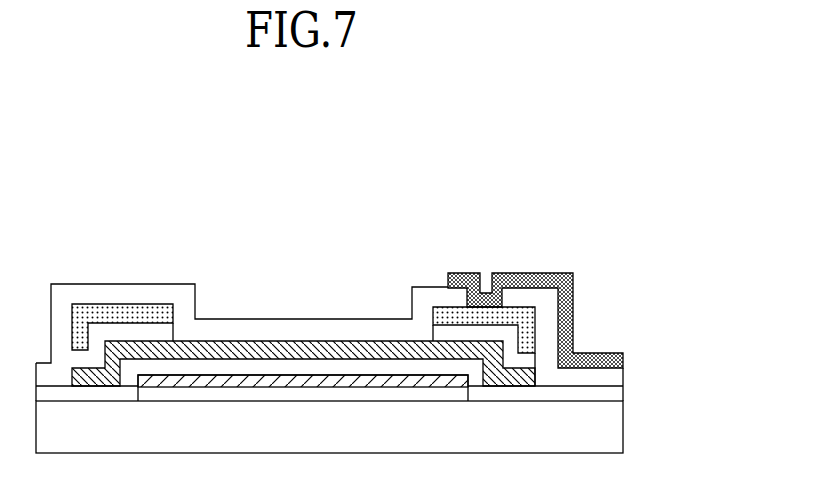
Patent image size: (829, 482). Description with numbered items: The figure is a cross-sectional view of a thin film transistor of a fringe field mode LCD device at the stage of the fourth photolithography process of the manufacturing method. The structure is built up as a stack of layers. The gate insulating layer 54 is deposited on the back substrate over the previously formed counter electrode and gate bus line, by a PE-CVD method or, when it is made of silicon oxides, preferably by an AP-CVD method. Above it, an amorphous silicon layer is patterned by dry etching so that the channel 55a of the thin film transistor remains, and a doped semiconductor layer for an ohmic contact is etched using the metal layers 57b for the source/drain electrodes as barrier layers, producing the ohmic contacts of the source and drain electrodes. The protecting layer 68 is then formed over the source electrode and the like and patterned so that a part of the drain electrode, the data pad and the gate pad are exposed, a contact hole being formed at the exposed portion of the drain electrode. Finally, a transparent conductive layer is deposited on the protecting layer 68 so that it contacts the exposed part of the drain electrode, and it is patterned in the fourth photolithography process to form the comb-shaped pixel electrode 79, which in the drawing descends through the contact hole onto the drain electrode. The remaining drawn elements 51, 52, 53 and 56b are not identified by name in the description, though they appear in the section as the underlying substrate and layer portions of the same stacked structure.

The substrate 51 is at (608, 432).
The underlying insulating layer 52 is at (255, 394).
The semiconductor layer 53 is at (353, 382).
The gate insulating layer 54 is at (608, 397).
The channel 55a is at (537, 380).
The gate electrode 56b is at (525, 362).
The metal layers for source/drain electrodes 57b is at (525, 326).
The protecting layer 68 is at (548, 302).
The comb-shaped pixel electrode 79 is at (543, 273).